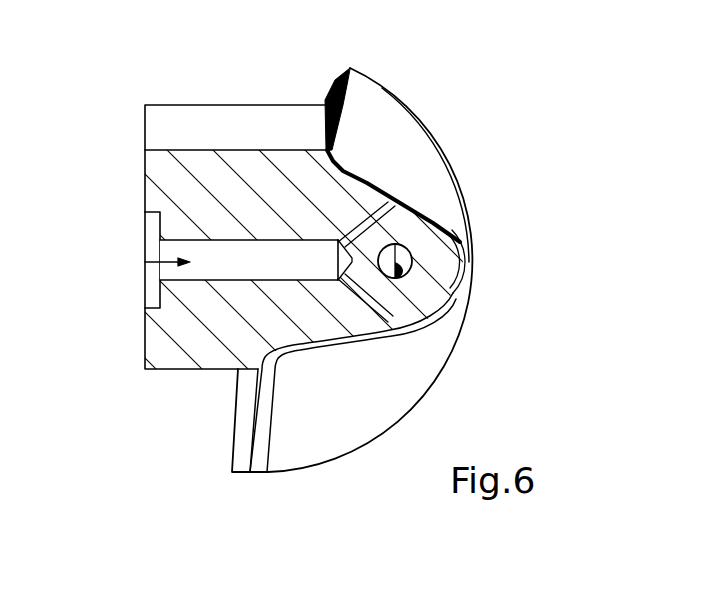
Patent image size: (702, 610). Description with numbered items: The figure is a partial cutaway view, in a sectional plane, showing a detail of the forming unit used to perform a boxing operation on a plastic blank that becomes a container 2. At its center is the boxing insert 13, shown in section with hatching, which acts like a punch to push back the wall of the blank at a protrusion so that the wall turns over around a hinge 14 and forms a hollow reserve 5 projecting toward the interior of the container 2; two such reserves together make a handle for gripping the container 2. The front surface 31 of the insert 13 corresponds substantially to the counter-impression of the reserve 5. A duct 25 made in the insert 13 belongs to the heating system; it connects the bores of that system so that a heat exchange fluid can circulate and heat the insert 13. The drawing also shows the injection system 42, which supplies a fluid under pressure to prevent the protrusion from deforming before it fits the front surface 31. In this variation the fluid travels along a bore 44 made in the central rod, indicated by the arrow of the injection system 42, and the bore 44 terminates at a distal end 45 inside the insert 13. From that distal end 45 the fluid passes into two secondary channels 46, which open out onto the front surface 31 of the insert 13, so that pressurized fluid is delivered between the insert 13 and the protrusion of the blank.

The container 2 is at (410, 112).
The hollow reserve 5 is at (460, 230).
The boxing insert 13 is at (163, 178).
The hinge 14 is at (333, 142).
The duct 25 is at (412, 253).
The front surface 31 is at (438, 305).
The injection system 42 is at (145, 262).
The bore 44 is at (256, 271).
The distal end 45 is at (336, 260).
The secondary channel 46 is at (385, 214).